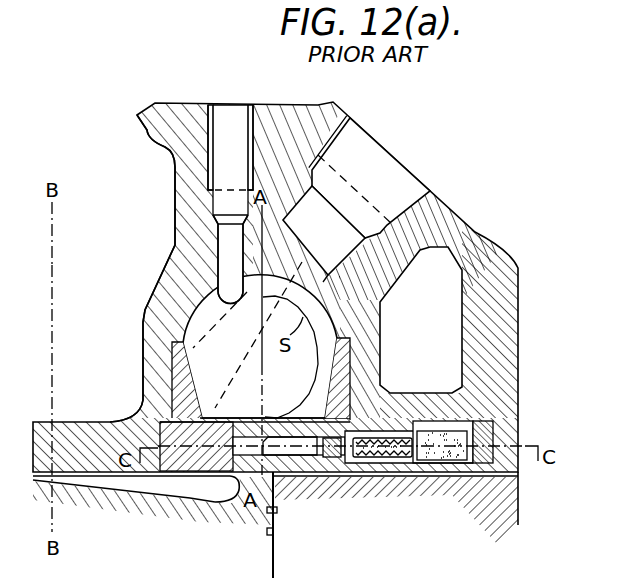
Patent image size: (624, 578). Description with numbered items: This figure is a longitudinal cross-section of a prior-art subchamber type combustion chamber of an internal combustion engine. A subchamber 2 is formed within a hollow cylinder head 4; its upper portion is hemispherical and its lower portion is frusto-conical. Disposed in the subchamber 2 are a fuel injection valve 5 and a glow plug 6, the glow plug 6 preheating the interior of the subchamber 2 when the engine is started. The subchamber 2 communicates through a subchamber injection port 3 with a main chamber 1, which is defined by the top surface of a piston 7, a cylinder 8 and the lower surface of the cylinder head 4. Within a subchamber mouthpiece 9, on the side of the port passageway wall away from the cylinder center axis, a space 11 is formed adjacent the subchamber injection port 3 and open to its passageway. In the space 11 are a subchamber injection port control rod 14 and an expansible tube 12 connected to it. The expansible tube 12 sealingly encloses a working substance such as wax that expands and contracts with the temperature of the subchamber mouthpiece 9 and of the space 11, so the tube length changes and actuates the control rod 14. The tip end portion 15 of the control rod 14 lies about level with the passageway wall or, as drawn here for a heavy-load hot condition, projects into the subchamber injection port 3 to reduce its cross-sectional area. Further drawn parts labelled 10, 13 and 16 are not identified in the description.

The main chamber 1 is at (123, 487).
The subchamber 2 is at (360, 338).
The subchamber injection port 3 is at (203, 425).
The cylinder head 4 is at (172, 285).
The fuel injection valve 5 is at (403, 186).
The glow plug 6 is at (239, 113).
The piston 7 is at (187, 503).
The cylinder 8 is at (280, 523).
The subchamber mouthpiece 9 is at (339, 387).
The end plug 10 is at (500, 470).
The space 11 is at (407, 465).
The expansible tube 12 is at (378, 462).
The block 13 is at (415, 477).
The subchamber injection port control rod 14 is at (322, 458).
The tip end portion 15 is at (233, 487).
The plate 16 is at (340, 478).